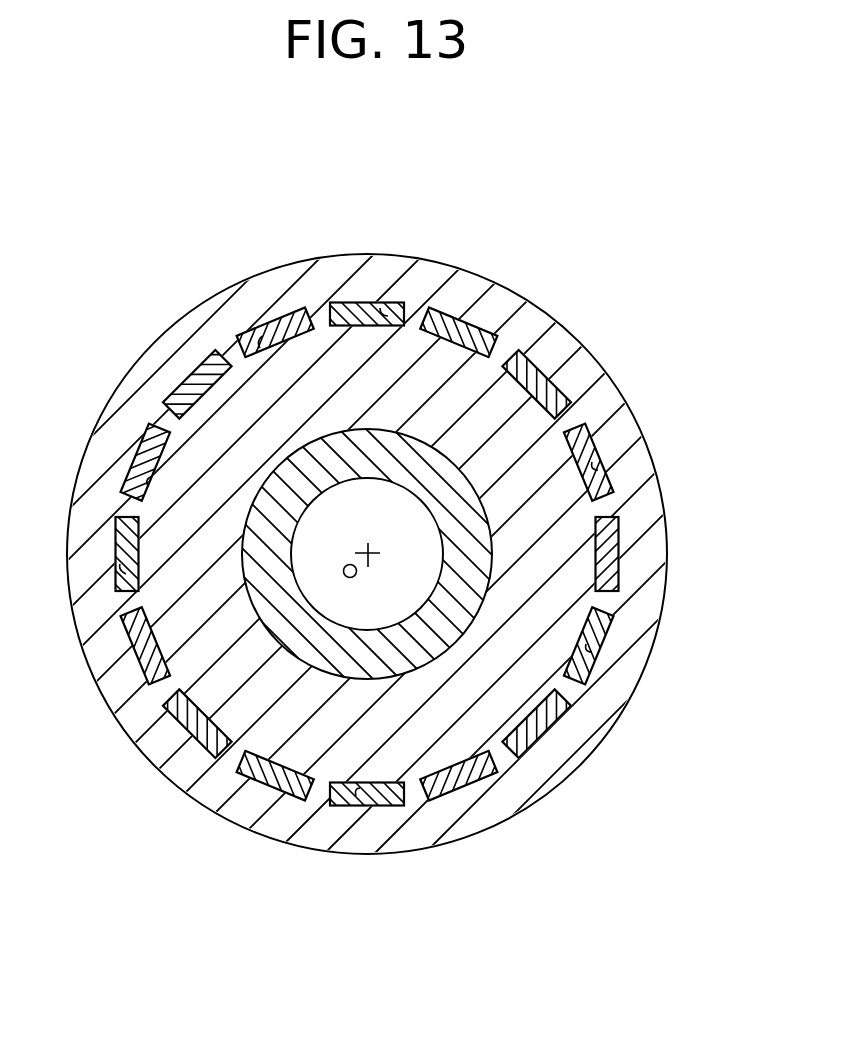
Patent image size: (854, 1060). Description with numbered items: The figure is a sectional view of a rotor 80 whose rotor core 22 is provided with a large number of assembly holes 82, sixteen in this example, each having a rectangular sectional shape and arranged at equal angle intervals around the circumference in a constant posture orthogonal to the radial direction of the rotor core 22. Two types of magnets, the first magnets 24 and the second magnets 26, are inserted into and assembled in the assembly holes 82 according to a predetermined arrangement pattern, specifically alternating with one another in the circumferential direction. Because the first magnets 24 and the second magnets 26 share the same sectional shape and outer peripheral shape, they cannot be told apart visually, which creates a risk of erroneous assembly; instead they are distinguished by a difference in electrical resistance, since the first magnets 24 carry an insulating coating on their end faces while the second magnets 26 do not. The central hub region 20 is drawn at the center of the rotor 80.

The rotor 80 is at (601, 271).
The rotor core 22 is at (173, 377).
The shaft/hub 20 is at (462, 530).
The first magnet 24 is at (290, 322).
The second magnet 26 is at (355, 303).
The assembly hole 82 is at (262, 338).